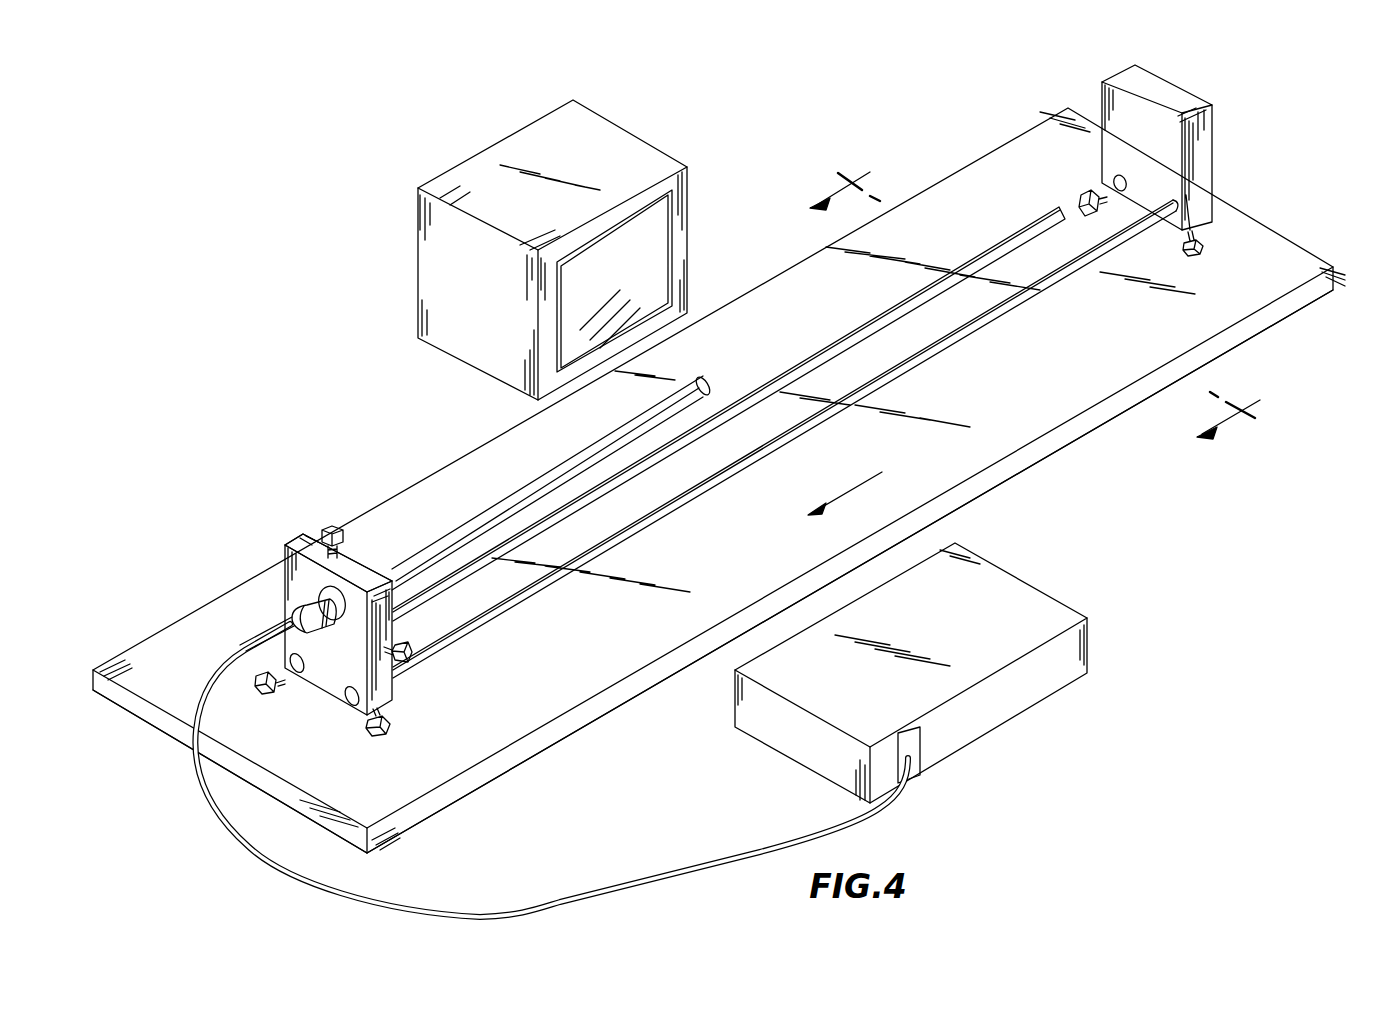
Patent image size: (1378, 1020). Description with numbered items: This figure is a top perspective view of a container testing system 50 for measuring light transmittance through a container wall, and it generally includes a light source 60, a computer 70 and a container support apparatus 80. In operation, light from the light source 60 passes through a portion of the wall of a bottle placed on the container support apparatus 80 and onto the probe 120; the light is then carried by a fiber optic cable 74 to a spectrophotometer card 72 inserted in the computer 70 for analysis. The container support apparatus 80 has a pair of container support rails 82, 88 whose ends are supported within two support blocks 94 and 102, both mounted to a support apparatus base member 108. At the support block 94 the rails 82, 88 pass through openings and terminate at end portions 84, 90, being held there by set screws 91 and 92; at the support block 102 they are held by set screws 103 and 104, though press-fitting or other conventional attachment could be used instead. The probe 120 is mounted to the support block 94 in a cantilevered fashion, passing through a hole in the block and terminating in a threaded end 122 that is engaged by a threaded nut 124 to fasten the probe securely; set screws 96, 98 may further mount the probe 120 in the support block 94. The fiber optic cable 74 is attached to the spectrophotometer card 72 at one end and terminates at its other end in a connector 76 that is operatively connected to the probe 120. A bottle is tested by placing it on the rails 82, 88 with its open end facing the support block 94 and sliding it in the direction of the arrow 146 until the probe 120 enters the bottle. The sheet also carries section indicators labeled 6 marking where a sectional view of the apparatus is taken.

The container testing system 50 is at (1263, 172).
The light source 60 is at (482, 150).
The computer 70 is at (1028, 583).
The spectrophotometer card 72 is at (921, 745).
The fiber optic cable 74 is at (485, 905).
The connector 76 is at (287, 623).
The container support apparatus 80 is at (244, 515).
The container support rail 82 is at (868, 325).
The end portion 84 is at (297, 675).
The container support rail 88 is at (938, 359).
The end portion 90 is at (348, 702).
The set screw 91 is at (260, 683).
The set screw 92 is at (383, 727).
The support block 94 is at (300, 541).
The set screw 96 is at (341, 525).
The set screw 98 is at (406, 655).
The support block 102 is at (1190, 100).
The set screw 103 is at (1077, 194).
The set screw 104 is at (1199, 251).
The support apparatus base member 108 is at (1226, 316).
The probe 120 is at (668, 390).
The threaded end 122 is at (313, 598).
The threaded nut 124 is at (282, 560).
The arrow 146 is at (862, 483).
The section line 6- 6 is at (1047, 293).